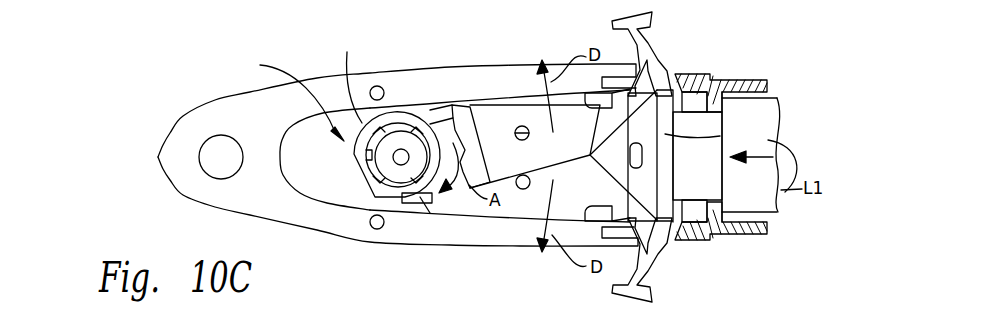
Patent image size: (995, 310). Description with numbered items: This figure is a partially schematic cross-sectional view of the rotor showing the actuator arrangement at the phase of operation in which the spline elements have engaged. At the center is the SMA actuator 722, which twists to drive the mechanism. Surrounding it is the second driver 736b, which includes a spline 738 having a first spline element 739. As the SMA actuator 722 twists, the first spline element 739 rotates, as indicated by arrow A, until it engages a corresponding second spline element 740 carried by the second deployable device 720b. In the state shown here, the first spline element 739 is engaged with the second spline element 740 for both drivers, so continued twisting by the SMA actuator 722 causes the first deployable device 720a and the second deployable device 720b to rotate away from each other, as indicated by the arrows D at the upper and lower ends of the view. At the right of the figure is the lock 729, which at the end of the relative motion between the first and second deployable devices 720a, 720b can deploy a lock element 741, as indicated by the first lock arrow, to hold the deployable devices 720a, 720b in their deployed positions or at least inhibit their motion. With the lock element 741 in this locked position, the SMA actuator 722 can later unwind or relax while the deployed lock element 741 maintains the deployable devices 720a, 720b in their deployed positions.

The second driver 736b is at (278, 97).
The spline 738 is at (352, 77).
The first spline element 739 is at (431, 122).
The first deployable device 720a is at (658, 50).
The second deployable device 720b is at (654, 264).
The lock element 741 is at (760, 113).
The lock 729 is at (777, 140).
The SMA actuator 722 is at (402, 165).
The second spline element 740 is at (419, 212).